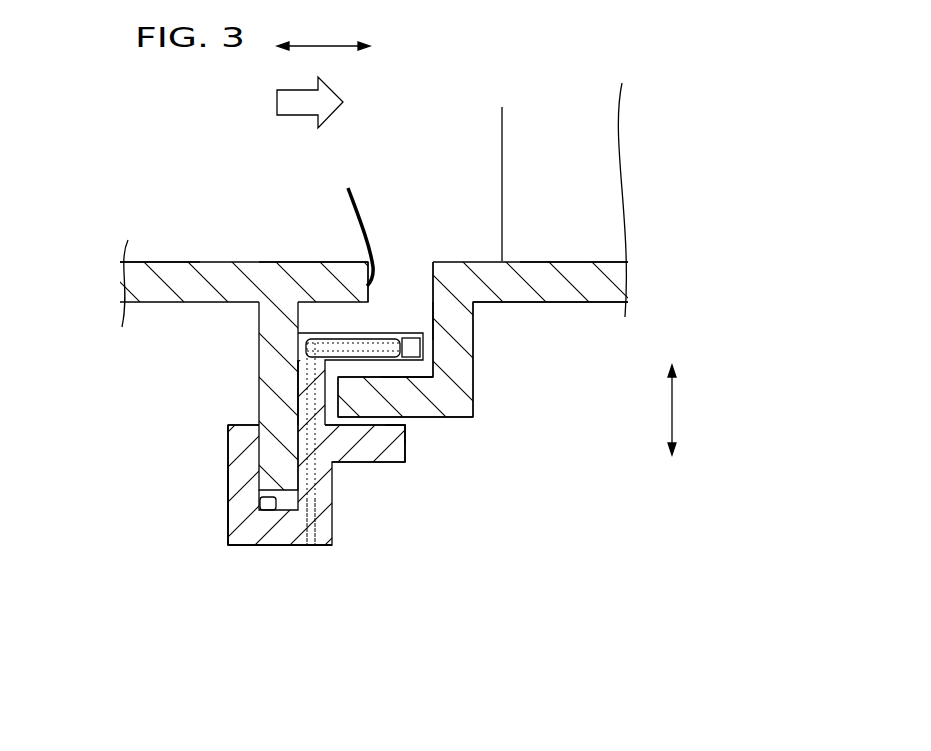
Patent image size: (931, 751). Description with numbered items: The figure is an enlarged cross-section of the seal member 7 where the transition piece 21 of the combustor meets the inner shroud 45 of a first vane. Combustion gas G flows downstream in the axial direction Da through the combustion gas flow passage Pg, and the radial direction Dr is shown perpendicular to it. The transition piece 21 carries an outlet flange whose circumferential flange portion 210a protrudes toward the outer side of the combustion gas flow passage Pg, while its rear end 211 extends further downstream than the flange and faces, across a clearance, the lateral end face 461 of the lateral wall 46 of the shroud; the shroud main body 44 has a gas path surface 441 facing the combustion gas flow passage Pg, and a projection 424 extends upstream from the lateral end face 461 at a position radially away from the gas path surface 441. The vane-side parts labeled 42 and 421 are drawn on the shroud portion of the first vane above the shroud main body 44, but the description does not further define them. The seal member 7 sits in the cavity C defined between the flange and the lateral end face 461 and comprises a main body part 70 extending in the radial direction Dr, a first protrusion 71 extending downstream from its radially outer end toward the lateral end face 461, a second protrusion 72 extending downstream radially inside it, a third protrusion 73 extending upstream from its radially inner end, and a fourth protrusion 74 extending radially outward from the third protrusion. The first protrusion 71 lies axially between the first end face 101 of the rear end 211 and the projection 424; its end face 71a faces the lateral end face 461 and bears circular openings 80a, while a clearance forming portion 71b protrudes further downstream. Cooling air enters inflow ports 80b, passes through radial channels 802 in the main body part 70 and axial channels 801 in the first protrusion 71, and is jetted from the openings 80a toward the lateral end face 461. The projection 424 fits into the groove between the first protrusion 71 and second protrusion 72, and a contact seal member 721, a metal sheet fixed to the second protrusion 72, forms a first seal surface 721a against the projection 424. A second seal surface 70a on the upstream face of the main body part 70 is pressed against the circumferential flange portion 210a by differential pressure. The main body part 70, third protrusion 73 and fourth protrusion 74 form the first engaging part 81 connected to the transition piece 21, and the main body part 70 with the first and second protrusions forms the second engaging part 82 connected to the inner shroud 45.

The transition piece 21 is at (125, 283).
The rear end 211 is at (292, 268).
The circumferential flange portion 210a is at (275, 360).
The first end face 101 is at (351, 221).
The cavity C is at (368, 310).
The combustion gas flow passage Pg is at (193, 222).
The second plate member (41a) 42 is at (595, 163).
The wall portion 421 is at (494, 132).
The shroud main body 44 is at (544, 261).
The gas path surface 441 is at (580, 254).
The inner shroud 45 is at (617, 280).
The lateral wall 46 is at (418, 314).
The lateral end face 461 is at (432, 308).
The projection 424 is at (448, 400).
The end face 71a is at (448, 383).
The clearance forming portion 71b is at (445, 378).
The first protrusion 71 is at (356, 318).
The axial channel 801 is at (393, 333).
The opening 80a is at (415, 350).
The inflow port 80b is at (312, 547).
The radial channel 802 is at (317, 553).
The second engaging part 82 is at (320, 393).
The main body part 70 is at (333, 536).
The seal member 7 is at (234, 550).
The second seal surface 70a is at (257, 460).
The fourth protrusion 74 is at (233, 490).
The first engaging part 81 is at (272, 502).
The third protrusion 73 is at (276, 547).
The second protrusion 72 is at (378, 465).
The contact seal member 721 is at (406, 452).
The first seal surface 721a is at (408, 428).
The axial direction Da is at (323, 31).
The radial direction Dr is at (689, 410).
The combustion gas G is at (278, 100).